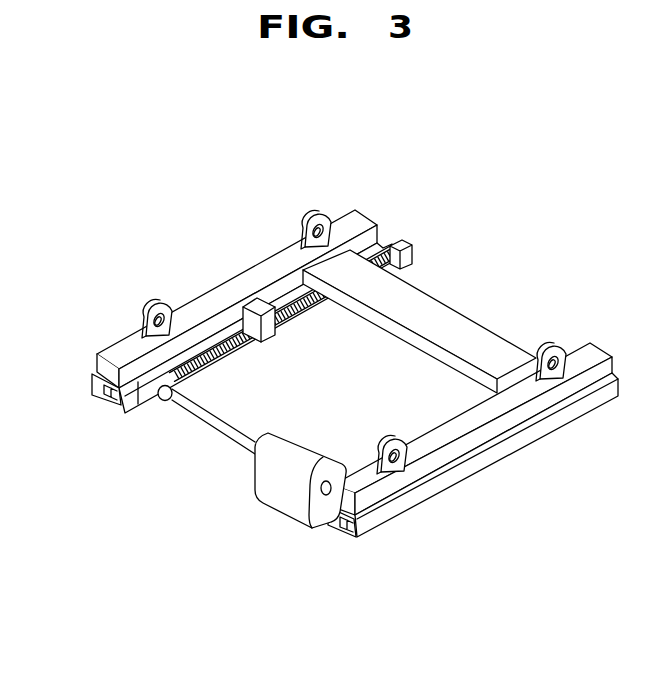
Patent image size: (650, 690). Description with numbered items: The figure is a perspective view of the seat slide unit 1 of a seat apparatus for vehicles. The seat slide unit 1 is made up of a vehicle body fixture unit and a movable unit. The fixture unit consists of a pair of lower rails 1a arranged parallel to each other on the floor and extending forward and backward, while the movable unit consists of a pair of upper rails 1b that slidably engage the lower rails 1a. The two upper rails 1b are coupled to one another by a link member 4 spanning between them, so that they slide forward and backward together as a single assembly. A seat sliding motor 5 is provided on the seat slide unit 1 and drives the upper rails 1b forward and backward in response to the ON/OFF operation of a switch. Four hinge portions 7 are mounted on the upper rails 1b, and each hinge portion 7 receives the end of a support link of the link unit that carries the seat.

The seat slide unit 1 is at (455, 197).
The lower rail 1a is at (117, 402).
The upper rail 1b is at (93, 360).
The link member 4 is at (434, 310).
The seat sliding motor 5 is at (281, 490).
The hinge portion 7 is at (302, 216).